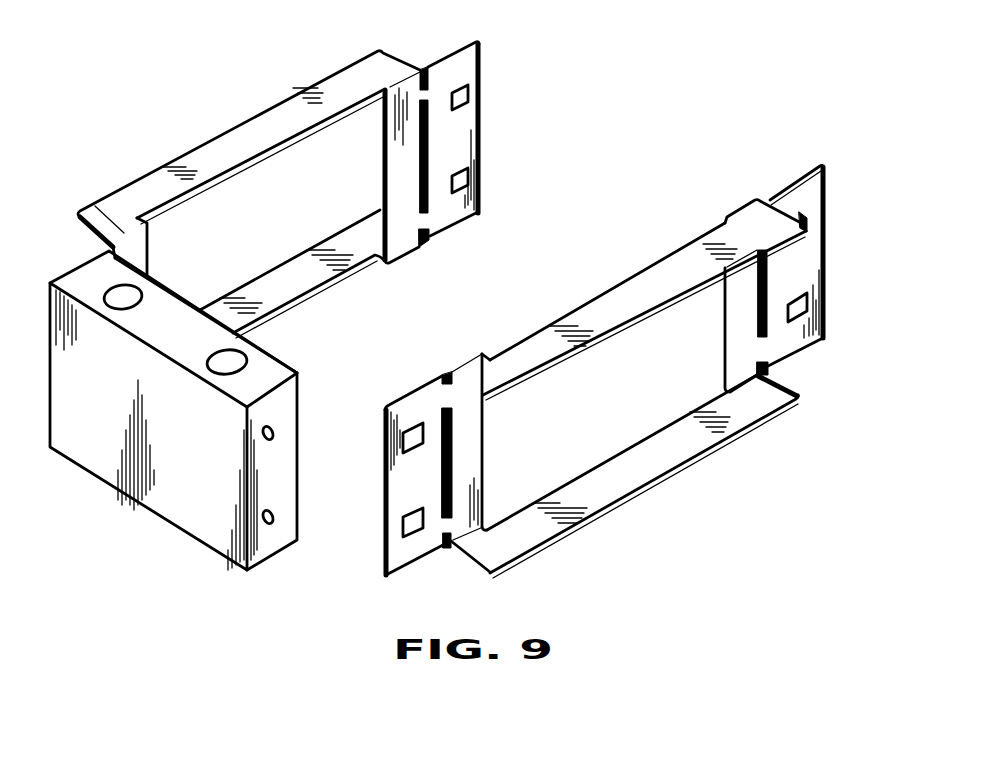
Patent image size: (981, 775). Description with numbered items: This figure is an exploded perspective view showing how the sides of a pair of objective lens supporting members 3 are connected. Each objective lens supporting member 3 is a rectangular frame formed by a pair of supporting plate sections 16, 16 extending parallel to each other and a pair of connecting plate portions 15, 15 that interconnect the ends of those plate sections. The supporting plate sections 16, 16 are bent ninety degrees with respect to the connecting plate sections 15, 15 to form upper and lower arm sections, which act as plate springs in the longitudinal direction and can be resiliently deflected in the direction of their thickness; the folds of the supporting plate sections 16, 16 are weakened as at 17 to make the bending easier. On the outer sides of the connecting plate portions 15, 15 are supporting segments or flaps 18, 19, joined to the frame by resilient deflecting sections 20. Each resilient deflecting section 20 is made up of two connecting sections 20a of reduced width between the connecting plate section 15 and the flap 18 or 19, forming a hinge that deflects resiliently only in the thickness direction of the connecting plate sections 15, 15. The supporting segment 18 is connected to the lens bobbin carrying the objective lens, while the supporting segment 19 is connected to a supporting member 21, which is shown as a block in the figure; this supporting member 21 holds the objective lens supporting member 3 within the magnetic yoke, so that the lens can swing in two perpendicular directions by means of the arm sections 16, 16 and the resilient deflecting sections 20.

The objective lens supporting member 3 is at (470, 308).
The connecting plate portion 15 is at (397, 157).
The supporting plate section 16 is at (217, 153).
The weakened folding section 17 is at (393, 86).
The supporting segment 18 is at (463, 130).
The supporting segment 19 is at (397, 480).
The resilient deflecting section 20 is at (425, 74).
The connecting section 20a is at (430, 98).
The supporting member 21 is at (102, 452).